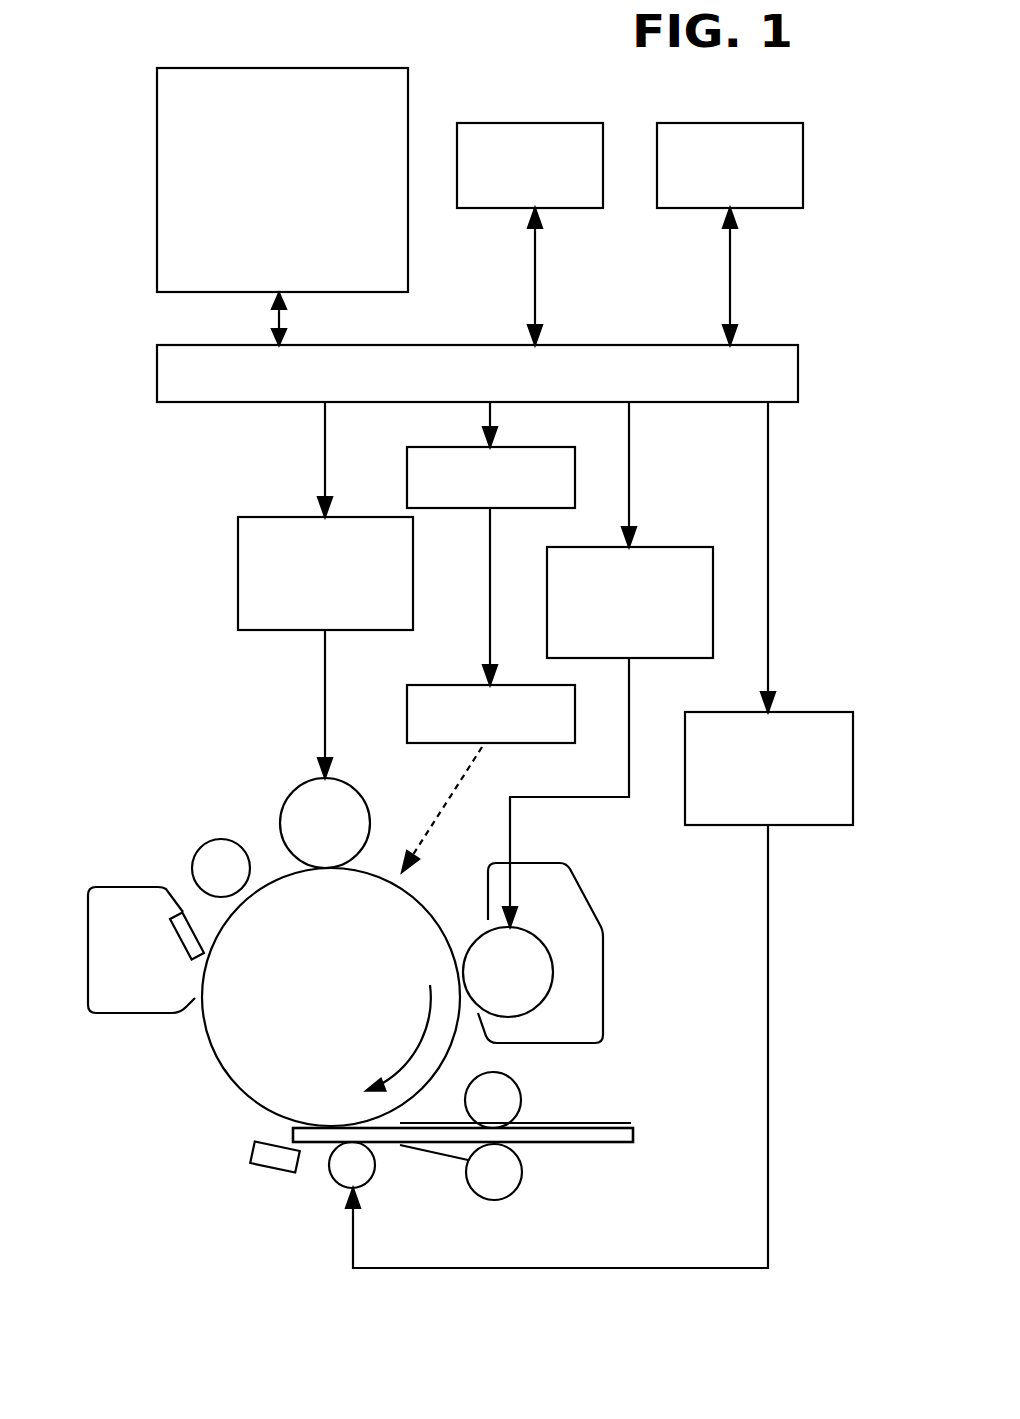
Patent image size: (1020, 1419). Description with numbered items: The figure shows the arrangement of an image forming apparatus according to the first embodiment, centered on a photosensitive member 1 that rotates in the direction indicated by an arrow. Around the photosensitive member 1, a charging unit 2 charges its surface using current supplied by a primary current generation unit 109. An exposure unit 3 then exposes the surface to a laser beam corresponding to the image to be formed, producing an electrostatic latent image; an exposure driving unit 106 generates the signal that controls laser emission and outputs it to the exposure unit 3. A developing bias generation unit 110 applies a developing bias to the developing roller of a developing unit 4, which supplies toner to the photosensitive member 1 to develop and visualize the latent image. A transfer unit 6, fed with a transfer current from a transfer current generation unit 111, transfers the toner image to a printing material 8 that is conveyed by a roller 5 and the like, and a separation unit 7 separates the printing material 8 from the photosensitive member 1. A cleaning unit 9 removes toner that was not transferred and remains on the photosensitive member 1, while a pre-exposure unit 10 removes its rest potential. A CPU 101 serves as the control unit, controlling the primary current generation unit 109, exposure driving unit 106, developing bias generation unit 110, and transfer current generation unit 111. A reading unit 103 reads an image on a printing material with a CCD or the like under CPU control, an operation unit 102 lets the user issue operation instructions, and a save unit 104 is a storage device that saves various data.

The photosensitive member 1 is at (224, 1033).
The charging unit 2 is at (284, 794).
The exposure unit 3 is at (428, 685).
The developing unit 4 is at (605, 992).
The roller 5 is at (483, 1170).
The transfer unit 6 is at (344, 1169).
The separation unit 7 is at (270, 1156).
The printing material 8 is at (633, 1130).
The cleaning unit 9 is at (98, 887).
The pre-exposure unit 10 is at (213, 845).
The CPU 101 is at (157, 378).
The operation unit 102 is at (507, 123).
The reading unit 103 is at (701, 123).
The save unit 104 is at (157, 180).
The exposure driving unit 106 is at (437, 447).
The primary current generation unit 109 is at (238, 605).
The developing bias generation unit 110 is at (662, 547).
The transfer current generation unit 111 is at (740, 825).